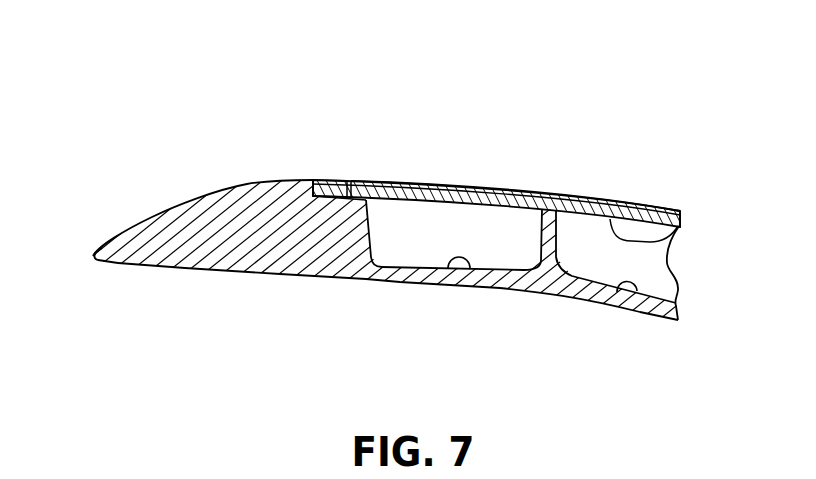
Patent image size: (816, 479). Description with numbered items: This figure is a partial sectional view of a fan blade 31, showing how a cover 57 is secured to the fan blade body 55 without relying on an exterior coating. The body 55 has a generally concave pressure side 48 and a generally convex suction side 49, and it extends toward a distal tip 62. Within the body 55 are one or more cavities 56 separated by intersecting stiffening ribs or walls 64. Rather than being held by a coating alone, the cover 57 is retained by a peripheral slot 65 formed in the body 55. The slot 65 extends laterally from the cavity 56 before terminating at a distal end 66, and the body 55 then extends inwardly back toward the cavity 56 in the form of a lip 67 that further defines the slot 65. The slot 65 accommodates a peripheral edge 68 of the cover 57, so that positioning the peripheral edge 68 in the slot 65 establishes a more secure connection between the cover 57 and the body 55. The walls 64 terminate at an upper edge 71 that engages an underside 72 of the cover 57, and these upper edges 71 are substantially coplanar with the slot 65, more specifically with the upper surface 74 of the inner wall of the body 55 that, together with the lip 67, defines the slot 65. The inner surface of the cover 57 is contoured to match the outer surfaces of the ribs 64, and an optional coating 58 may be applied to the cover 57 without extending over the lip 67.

The fan blade 31 is at (622, 110).
The pressure side 48 is at (407, 283).
The suction side 49 is at (257, 182).
The fan blade body 55 is at (193, 237).
The cavities 56 is at (450, 262).
The cover 57 is at (467, 186).
The coating 58 is at (302, 184).
The distal tip 62 is at (92, 256).
The stiffening ribs or walls 64 is at (548, 236).
The peripheral slot 65 is at (368, 201).
The distal end 66 is at (317, 187).
The lip 67 is at (337, 187).
The peripheral edge 68 is at (310, 192).
The upper edge 71 is at (550, 188).
The underside 72 is at (683, 212).
The upper surface 74 is at (380, 186).